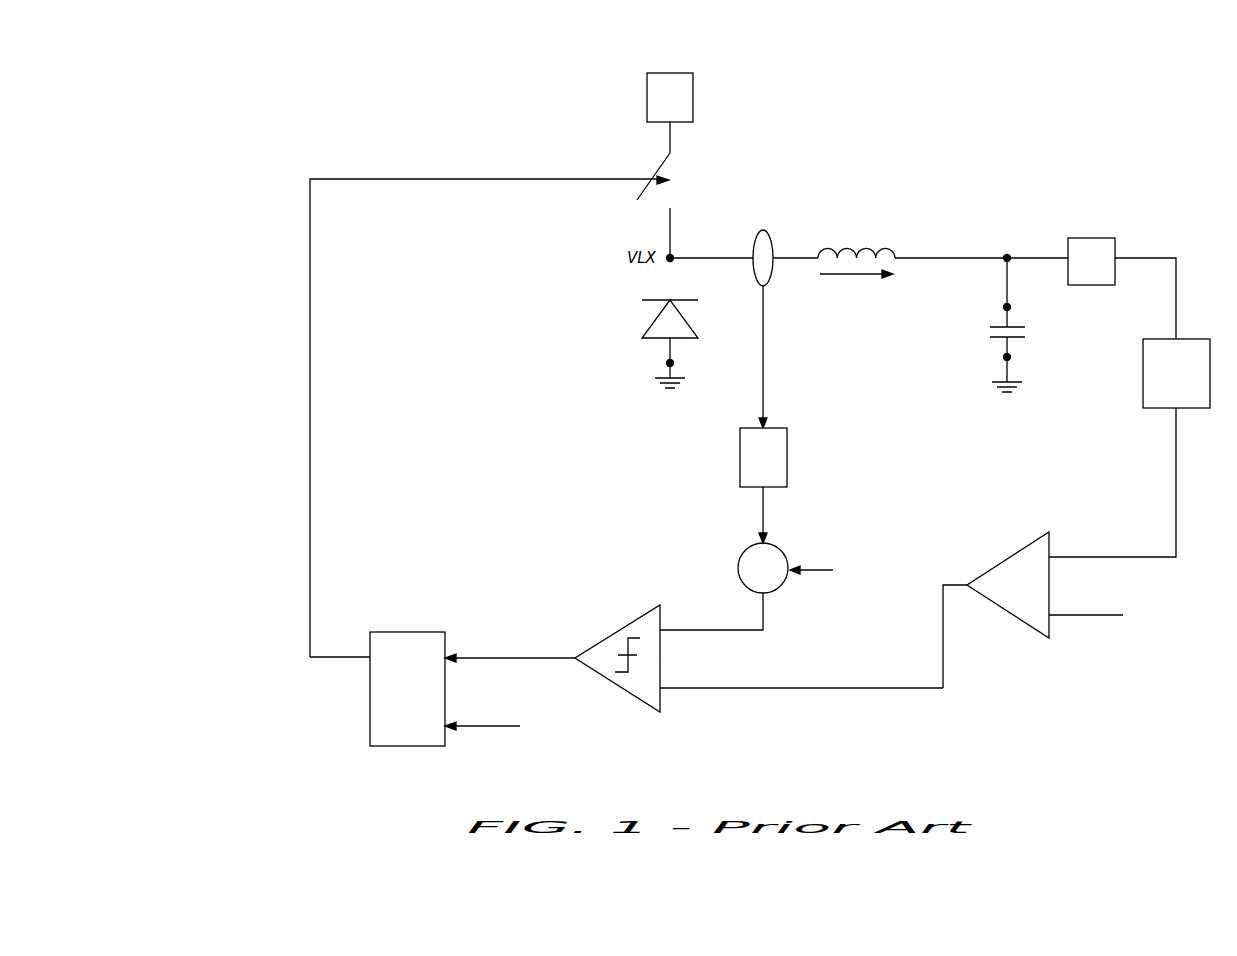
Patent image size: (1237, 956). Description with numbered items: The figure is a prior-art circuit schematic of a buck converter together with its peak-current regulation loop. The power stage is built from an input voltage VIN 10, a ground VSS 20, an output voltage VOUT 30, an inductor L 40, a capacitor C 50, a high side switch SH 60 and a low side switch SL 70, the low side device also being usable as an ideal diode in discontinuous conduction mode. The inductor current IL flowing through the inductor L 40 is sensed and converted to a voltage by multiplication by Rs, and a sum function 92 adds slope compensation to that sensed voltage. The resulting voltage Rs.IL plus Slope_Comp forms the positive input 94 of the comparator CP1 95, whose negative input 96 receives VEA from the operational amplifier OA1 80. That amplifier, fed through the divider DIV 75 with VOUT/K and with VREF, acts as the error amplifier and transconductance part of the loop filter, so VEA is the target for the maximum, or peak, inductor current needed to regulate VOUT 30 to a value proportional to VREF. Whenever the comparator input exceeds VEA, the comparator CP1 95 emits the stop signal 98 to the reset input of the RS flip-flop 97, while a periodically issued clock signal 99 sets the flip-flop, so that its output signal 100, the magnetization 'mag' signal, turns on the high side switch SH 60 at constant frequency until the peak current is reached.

The output signal 100 is at (263, 184).
The input voltage VIN 10 is at (677, 62).
The ground VSS 20 is at (656, 408).
The output voltage VOUT 30 is at (1097, 215).
The inductor L 40 is at (872, 225).
The capacitor C 50 is at (984, 333).
The high side switch SH 60 is at (703, 184).
The low side switch SL 70 is at (702, 320).
The divider DIV 75 is at (1190, 339).
The operational amplifier OA1 80 is at (1003, 612).
The sum function with slope compensation 92 is at (738, 568).
The positive input 94 is at (733, 623).
The comparator CP1 95 is at (616, 688).
The comparator negative input VEA 96 is at (801, 689).
The RS flip-flop 97 is at (366, 717).
The Stop signal 98 is at (510, 648).
The Clk signal 99 is at (486, 717).